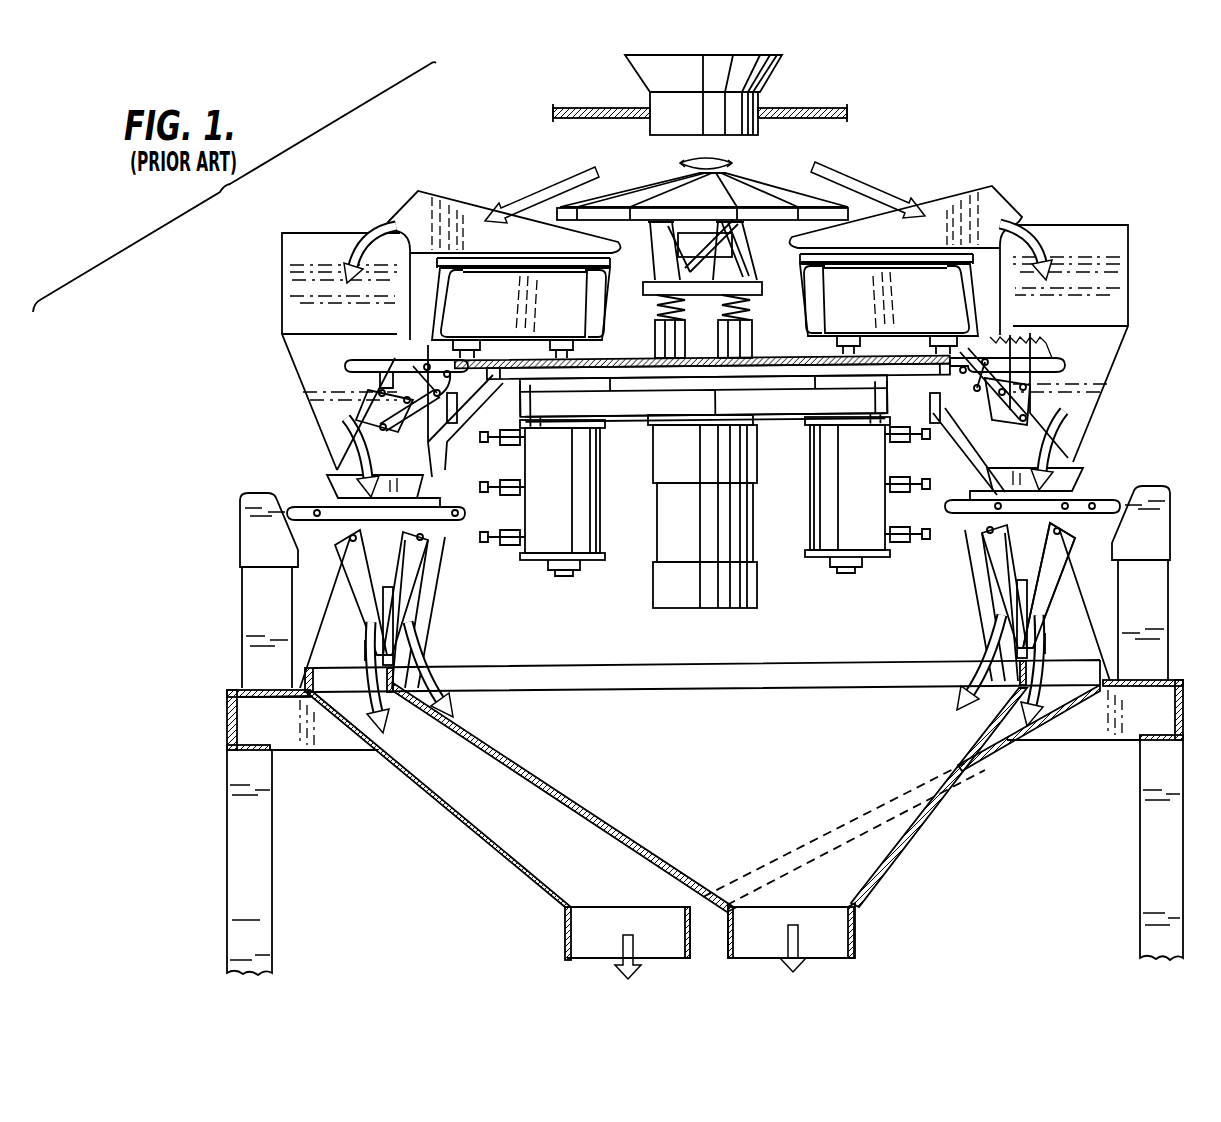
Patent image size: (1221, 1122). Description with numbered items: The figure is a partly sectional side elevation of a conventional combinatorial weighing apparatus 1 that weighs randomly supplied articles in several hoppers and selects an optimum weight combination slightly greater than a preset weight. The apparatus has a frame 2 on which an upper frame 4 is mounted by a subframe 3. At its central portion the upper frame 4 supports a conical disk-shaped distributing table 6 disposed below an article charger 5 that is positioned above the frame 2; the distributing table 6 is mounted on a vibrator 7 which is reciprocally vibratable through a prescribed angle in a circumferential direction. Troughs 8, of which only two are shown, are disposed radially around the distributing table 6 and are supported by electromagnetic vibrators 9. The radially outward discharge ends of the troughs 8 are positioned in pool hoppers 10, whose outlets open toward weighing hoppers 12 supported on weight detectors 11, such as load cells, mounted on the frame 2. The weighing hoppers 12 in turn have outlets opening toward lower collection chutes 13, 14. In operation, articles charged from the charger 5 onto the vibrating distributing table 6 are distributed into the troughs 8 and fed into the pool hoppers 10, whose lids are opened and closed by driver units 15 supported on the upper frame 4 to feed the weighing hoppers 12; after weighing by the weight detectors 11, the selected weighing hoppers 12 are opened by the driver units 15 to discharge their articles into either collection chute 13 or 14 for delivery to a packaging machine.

The combinatorial weighing apparatus 1 is at (449, 121).
The frame 2 is at (1170, 768).
The subframe 3 is at (1062, 595).
The upper frame 4 is at (610, 380).
The article charger 5 is at (770, 72).
The distributing table 6 is at (753, 193).
The vibrator 7 is at (728, 247).
The troughs 8 is at (470, 217).
The electromagnetic vibrators 9 is at (473, 325).
The pool hoppers 10 is at (313, 384).
The weight detectors 11 is at (262, 611).
The weighing hoppers 12 is at (390, 558).
The collection chute 13 is at (488, 757).
The collection chute 14 is at (476, 842).
The driver units 15 is at (583, 540).